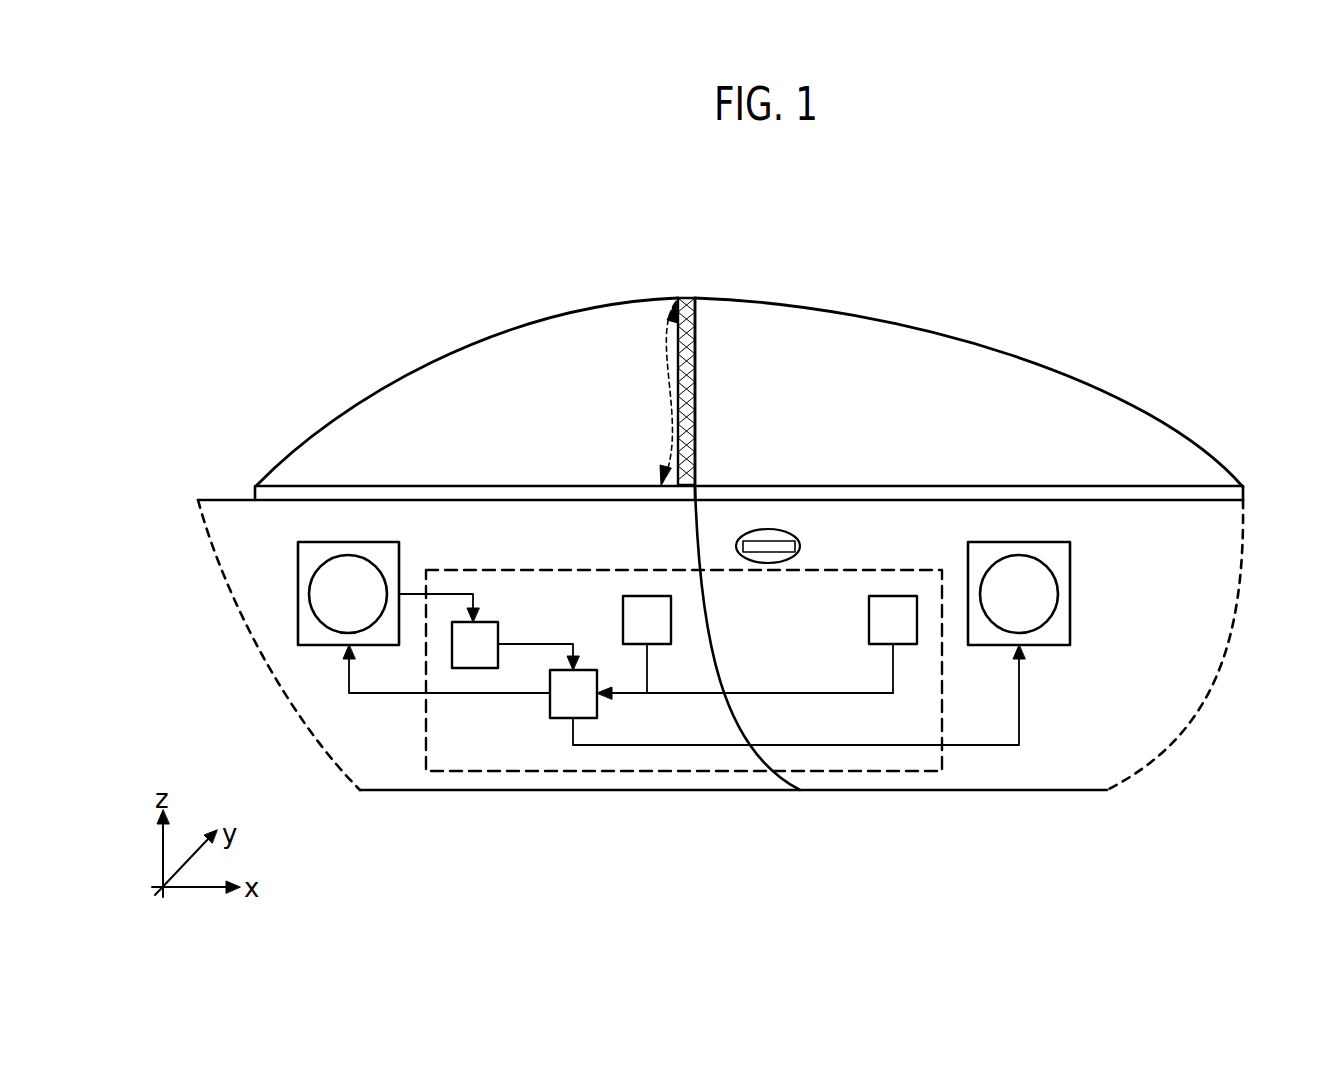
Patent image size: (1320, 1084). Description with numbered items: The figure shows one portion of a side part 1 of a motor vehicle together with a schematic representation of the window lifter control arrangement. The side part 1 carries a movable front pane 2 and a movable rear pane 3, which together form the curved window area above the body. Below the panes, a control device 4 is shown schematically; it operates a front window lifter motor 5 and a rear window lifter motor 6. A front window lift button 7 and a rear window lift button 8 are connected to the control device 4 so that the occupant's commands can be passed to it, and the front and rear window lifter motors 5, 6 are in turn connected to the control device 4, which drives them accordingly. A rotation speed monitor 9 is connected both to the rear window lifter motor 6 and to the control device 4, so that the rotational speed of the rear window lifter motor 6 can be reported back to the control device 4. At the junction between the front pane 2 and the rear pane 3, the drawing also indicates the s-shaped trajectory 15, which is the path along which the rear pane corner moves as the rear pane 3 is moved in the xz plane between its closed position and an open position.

The side part 1 is at (1140, 315).
The front pane 2 is at (950, 352).
The rear pane 3 is at (452, 375).
The control device 4 is at (555, 718).
The front window lifter motor 5 is at (1070, 590).
The rear window lifter motor 6 is at (298, 595).
The front window lift button 7 is at (869, 615).
The rear window lift button 8 is at (623, 612).
The rotation speed monitor 9 is at (487, 622).
The s-shaped trajectory 15 is at (667, 375).